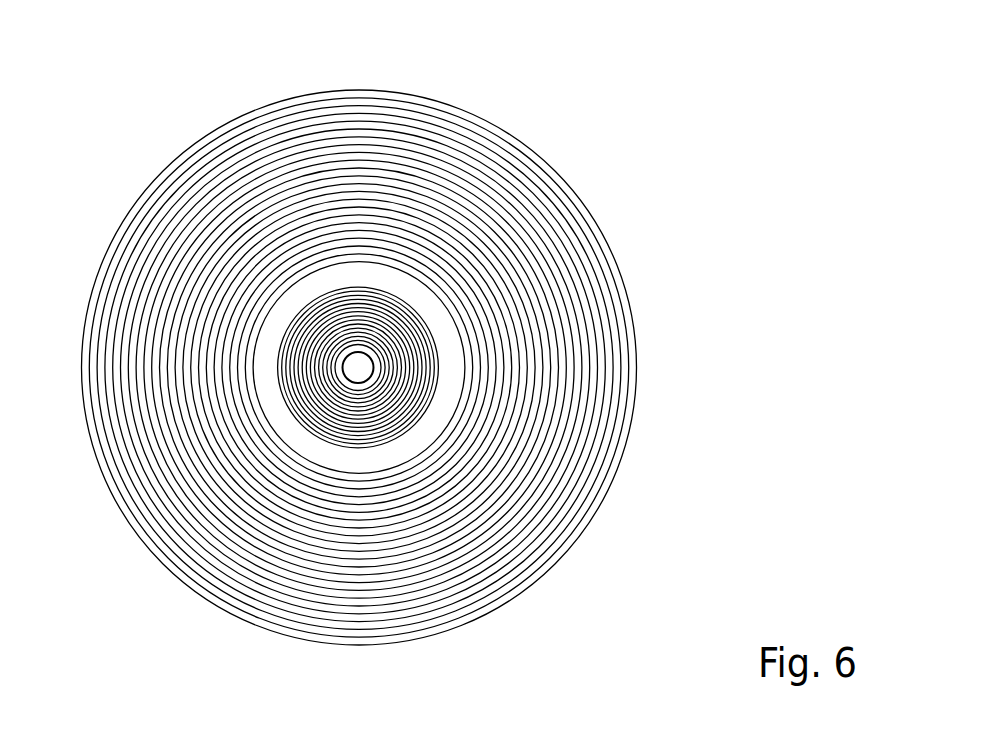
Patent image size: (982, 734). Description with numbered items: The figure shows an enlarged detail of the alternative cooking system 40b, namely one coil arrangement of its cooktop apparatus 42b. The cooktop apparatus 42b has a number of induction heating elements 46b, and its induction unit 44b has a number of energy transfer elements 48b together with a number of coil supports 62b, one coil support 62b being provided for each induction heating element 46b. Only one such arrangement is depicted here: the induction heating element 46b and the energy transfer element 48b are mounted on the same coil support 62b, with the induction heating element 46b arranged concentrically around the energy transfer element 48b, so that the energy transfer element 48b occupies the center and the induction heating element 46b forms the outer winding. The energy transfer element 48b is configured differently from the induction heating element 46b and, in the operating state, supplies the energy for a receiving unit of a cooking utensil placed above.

The cooking system 40b is at (692, 104).
The cooktop apparatus 42b is at (652, 192).
The induction unit 44b is at (636, 250).
The induction heating element 46b is at (521, 224).
The energy transfer element 48b is at (357, 327).
The coil support 62b is at (448, 384).